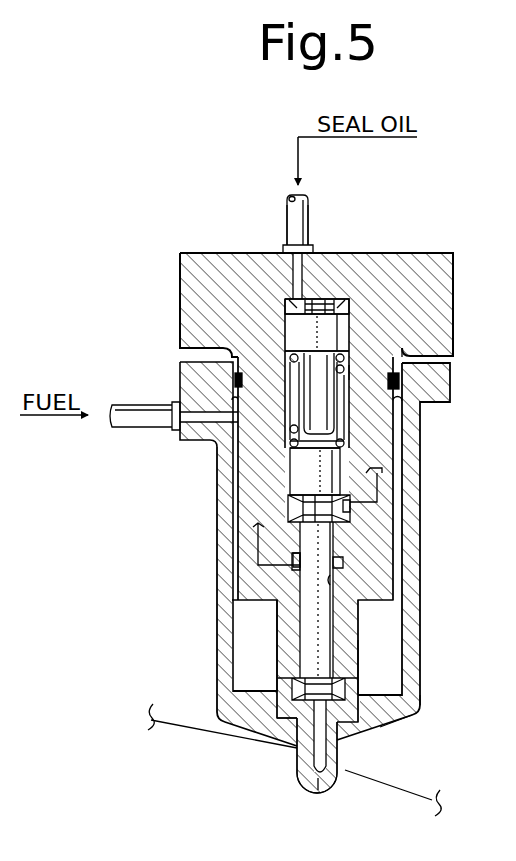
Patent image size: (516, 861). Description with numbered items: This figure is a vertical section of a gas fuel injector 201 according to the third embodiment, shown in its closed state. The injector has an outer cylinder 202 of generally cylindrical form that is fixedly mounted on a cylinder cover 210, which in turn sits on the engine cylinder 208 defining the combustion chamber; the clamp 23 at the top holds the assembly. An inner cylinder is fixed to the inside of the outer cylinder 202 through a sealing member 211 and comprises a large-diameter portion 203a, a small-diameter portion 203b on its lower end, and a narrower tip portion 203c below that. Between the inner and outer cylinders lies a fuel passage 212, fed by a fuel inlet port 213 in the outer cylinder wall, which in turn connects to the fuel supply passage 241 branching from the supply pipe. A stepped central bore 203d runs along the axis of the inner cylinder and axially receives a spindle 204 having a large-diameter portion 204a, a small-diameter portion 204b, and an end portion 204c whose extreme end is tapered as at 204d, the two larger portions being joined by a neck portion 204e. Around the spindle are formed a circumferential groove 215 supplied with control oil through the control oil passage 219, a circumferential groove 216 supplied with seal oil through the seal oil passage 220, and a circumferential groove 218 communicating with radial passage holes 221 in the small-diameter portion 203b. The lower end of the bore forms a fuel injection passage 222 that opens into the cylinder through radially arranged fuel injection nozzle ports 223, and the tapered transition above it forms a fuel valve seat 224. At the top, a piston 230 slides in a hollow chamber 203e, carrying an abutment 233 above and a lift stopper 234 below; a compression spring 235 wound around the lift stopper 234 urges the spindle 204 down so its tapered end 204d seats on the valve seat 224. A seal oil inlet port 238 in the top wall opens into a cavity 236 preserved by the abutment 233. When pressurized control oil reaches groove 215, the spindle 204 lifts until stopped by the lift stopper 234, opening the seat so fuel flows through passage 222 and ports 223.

The fuel injector 201 is at (445, 247).
The clamp block 23 is at (176, 282).
The outer cylinder 202 is at (182, 370).
The large-diameter portion 203a is at (233, 515).
The small-diameter portion 203b is at (277, 653).
The tip portion 203c is at (343, 758).
The central bore 203d is at (362, 606).
The hollow chamber 203e is at (350, 373).
The spindle 204 is at (354, 462).
The large-diameter portion 204a is at (357, 507).
The small-diameter portion 204b is at (333, 580).
The end portion 204c is at (423, 710).
The tapered end 204d is at (398, 728).
The neck portion 204e is at (355, 546).
The engine cylinder 208 is at (195, 764).
The cylinder cover 210 is at (411, 771).
The sealing member 211 is at (401, 380).
The fuel passage 212 is at (235, 485).
The fuel inlet port 213 is at (203, 435).
The circumferential groove 215 is at (270, 582).
The circumferential groove 216 is at (245, 600).
The circumferential groove 218 is at (360, 656).
The control oil passage 219 is at (380, 487).
The seal oil passage 220 is at (260, 535).
The radial passage holes 221 is at (355, 686).
The fuel injection passage 222 is at (310, 768).
The fuel injection nozzle ports 223 is at (317, 782).
The fuel valve seat 224 is at (288, 716).
The piston 230 is at (286, 325).
The abutment 233 is at (320, 305).
The lift stopper 234 is at (352, 450).
The compression spring 235 is at (325, 420).
The cavity 236 is at (350, 328).
The seal oil inlet port 238 is at (294, 280).
The fuel supply passage 241 is at (285, 205).